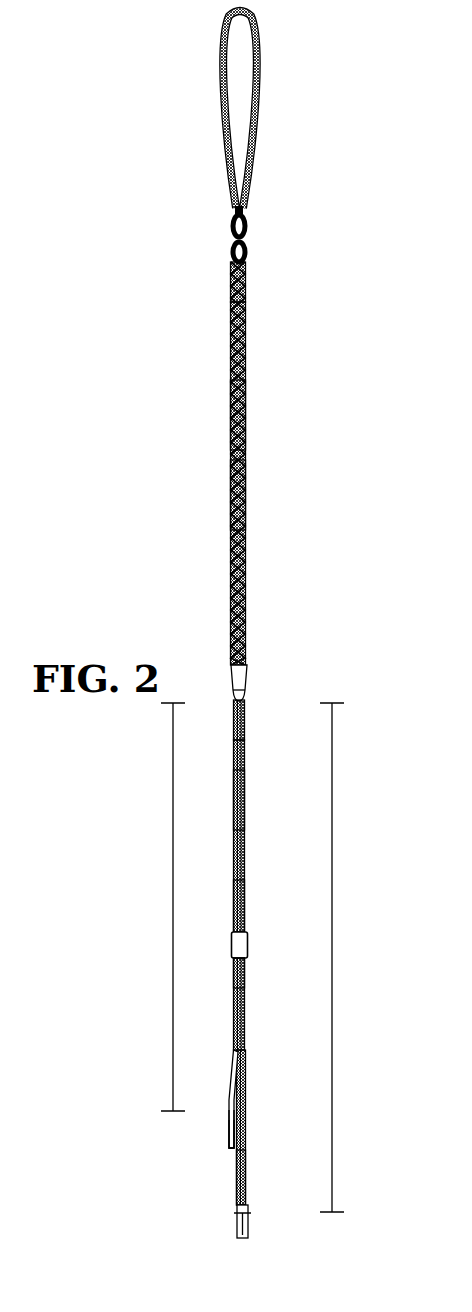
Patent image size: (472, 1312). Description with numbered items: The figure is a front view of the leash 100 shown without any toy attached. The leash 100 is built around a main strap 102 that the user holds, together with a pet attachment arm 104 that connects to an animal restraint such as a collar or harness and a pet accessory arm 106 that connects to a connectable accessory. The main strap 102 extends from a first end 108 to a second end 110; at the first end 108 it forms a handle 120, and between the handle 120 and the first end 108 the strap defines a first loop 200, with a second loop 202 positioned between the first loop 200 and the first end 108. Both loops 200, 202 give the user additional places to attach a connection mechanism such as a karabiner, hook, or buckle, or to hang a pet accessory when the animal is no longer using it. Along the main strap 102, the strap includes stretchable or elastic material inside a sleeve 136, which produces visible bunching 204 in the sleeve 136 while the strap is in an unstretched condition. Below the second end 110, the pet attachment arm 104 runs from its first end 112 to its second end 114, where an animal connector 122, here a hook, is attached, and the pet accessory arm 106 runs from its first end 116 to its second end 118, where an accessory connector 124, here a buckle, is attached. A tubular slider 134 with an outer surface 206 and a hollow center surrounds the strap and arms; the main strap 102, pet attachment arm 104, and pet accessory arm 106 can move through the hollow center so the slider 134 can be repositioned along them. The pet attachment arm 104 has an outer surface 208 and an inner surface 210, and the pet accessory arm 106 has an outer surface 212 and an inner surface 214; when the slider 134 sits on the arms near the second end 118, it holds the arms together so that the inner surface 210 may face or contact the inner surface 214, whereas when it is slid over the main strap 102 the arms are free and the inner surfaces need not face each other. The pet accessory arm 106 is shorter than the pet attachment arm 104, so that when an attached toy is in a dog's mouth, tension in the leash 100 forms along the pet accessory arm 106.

The leash 100 is at (146, 220).
The main strap 102 is at (246, 437).
The pet attachment arm 104 is at (245, 825).
The pet accessory arm 106 is at (233, 790).
The first end 108 is at (231, 268).
The second end 110 is at (246, 700).
The first end 112 is at (245, 708).
The second end 114 is at (248, 1190).
The first end 116 is at (232, 700).
The second end 118 is at (229, 1110).
The handle 120 is at (257, 22).
The animal connector 122 is at (248, 1226).
The accessory connector 124 is at (233, 1145).
The slider 134 is at (248, 942).
The sleeve 136 is at (231, 415).
The first loop 200 is at (250, 225).
The second loop 202 is at (249, 252).
The bunching 204 is at (231, 497).
The outer surface 206 is at (233, 940).
The outer surface 208 is at (313, 992).
The inner surface 210 is at (232, 1165).
The outer surface 212 is at (226, 970).
The inner surface 214 is at (313, 1094).